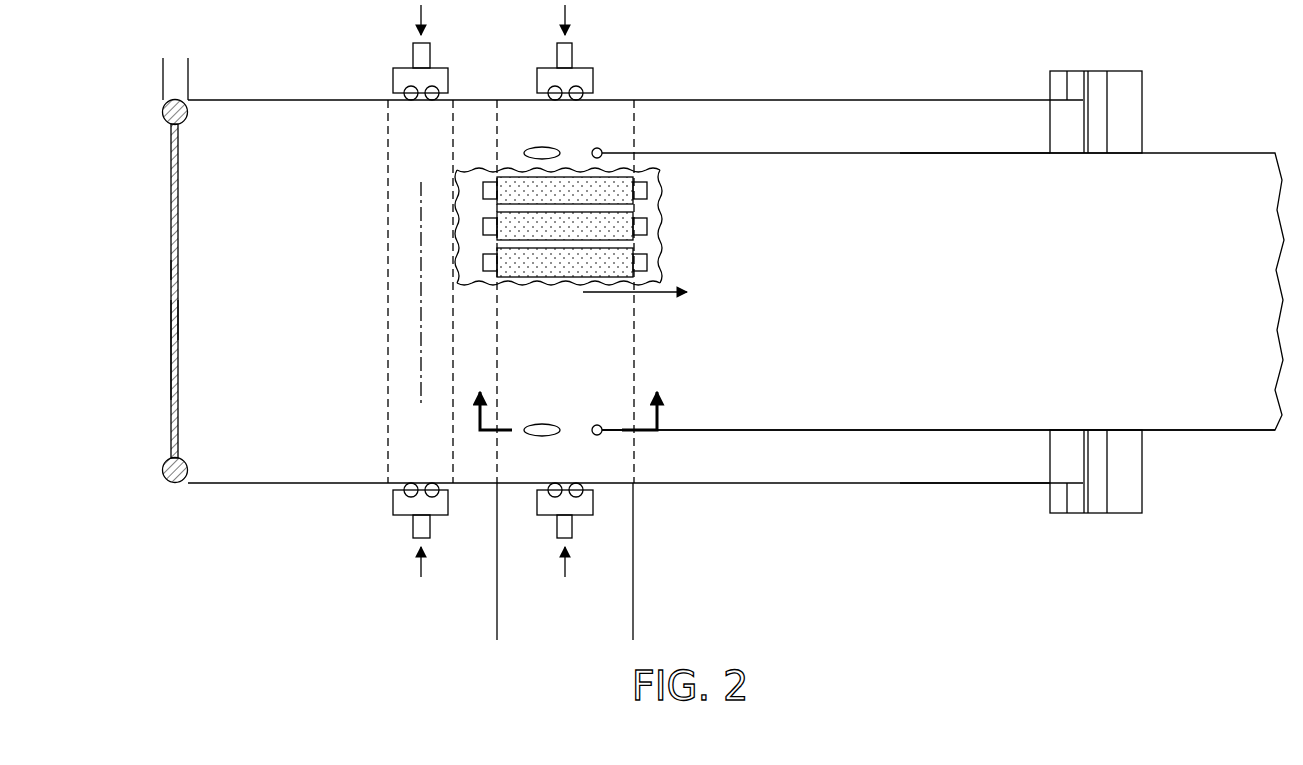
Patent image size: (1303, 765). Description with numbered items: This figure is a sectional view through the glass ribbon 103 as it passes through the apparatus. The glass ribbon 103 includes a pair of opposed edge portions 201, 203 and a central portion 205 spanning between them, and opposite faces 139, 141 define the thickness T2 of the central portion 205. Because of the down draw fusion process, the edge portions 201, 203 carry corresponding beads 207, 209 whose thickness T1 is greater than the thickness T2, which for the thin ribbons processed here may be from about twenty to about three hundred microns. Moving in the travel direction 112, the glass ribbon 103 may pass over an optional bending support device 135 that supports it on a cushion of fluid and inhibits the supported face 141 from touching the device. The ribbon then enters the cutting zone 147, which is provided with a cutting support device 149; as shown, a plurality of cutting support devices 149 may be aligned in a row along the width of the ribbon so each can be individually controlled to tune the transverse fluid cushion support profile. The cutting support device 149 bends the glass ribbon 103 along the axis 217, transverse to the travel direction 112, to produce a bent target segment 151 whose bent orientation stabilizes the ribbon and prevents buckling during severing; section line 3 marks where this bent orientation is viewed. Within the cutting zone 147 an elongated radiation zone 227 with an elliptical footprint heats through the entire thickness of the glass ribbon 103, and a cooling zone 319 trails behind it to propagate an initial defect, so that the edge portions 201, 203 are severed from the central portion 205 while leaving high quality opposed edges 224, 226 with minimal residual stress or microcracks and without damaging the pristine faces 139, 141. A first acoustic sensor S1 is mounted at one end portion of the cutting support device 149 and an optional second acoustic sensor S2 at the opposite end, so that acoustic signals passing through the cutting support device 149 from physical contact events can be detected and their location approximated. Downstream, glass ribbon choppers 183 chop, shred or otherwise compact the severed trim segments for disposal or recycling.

The glass ribbon 103 is at (160, 258).
The travel direction 112 is at (588, 292).
The bending support device 135 is at (388, 183).
The face 139 is at (848, 285).
The face 141 is at (168, 353).
The cutting zone 147 is at (497, 632).
The cutting support device 149 is at (574, 175).
The bent target segment 151 is at (614, 410).
The glass ribbon chopper 183 is at (1142, 108).
The edge portion 201 is at (171, 437).
The edge portion 203 is at (170, 113).
The central portion 205 is at (170, 318).
The bead 207 is at (188, 471).
The bead 209 is at (188, 108).
The axis 217 is at (421, 238).
The opposed edge 224 is at (965, 432).
The opposed edge 226 is at (966, 153).
The elongated radiation zone 227 is at (538, 424).
The cooling zone 319 is at (595, 425).
The first acoustic sensor S1 is at (650, 170).
The second acoustic sensor S2 is at (483, 229).
The thickness T1 is at (133, 68).
The thickness T2 is at (143, 270).
The section line 3- 3 is at (567, 386).